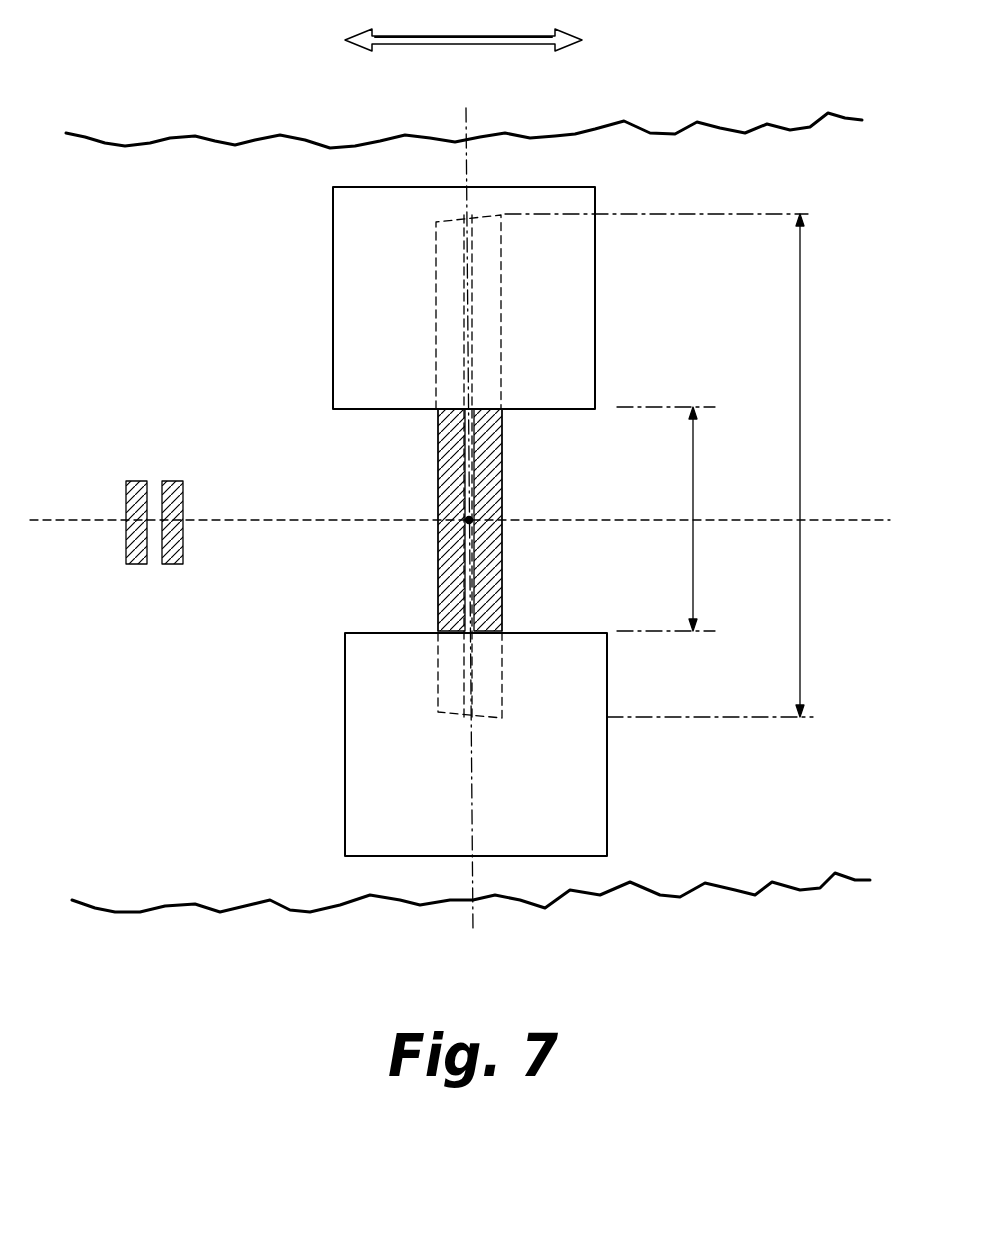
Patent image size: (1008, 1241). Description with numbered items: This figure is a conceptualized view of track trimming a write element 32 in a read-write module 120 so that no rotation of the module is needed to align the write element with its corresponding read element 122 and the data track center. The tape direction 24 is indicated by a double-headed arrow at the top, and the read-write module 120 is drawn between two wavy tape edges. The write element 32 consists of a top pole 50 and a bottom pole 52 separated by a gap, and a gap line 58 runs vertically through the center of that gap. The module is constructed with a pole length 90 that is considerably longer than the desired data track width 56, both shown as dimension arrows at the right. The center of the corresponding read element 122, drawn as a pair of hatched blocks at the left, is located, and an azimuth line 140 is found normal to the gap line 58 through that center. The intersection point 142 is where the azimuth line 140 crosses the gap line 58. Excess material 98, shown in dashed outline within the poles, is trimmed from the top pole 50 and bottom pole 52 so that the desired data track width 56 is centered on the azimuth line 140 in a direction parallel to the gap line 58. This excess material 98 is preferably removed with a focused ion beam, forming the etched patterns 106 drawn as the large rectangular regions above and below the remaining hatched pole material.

The tape direction 24 is at (495, 44).
The write element 32 is at (415, 457).
The top pole 50 is at (502, 541).
The bottom pole 52 is at (437, 541).
The data track width 56 is at (692, 458).
The gap line 58 is at (473, 786).
The pole length 90 is at (799, 262).
The excess material 98 is at (415, 285).
The etched patterns 106 is at (333, 297).
The read-write module 120 is at (283, 912).
The corresponding read element 122 is at (153, 466).
The azimuth line 140 is at (279, 522).
The intersection point 142 is at (471, 518).